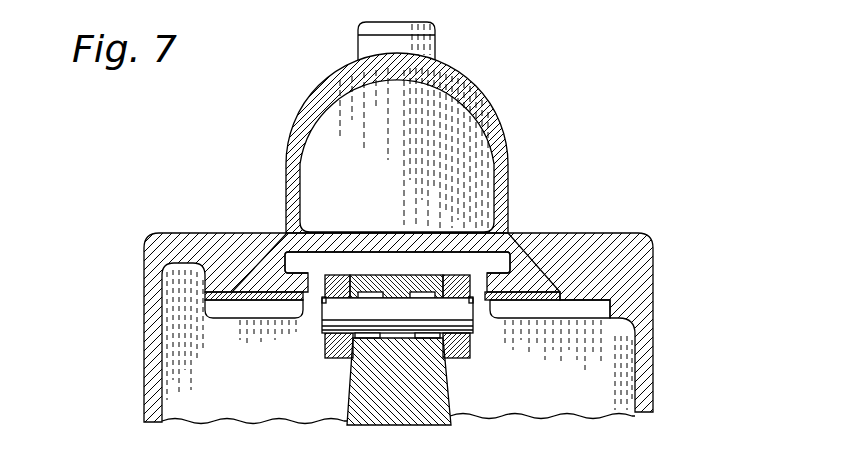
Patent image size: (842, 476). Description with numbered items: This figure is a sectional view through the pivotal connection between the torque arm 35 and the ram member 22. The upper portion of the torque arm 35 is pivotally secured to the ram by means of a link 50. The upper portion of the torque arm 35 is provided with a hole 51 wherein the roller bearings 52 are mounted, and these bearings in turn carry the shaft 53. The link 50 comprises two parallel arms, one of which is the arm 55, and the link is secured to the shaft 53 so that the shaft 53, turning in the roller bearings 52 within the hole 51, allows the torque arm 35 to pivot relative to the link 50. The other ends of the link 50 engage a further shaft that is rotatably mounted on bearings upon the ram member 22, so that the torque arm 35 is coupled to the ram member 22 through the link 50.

The ram member 22 is at (474, 83).
The torque arm 35 is at (447, 388).
The link 50 is at (470, 348).
The hole 51 is at (390, 288).
The roller bearings 52 is at (430, 275).
The shaft 53 is at (332, 317).
The arm 55 is at (337, 274).